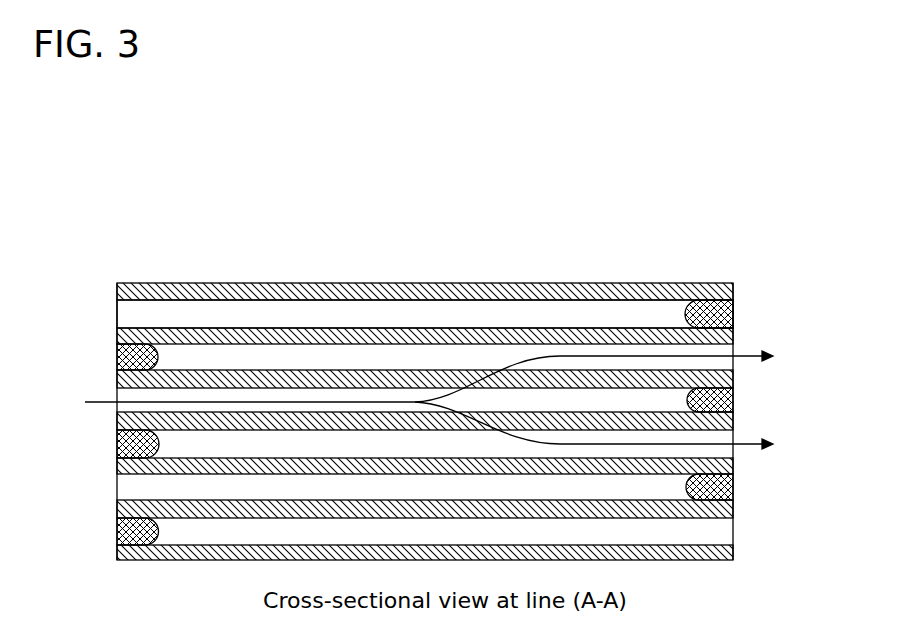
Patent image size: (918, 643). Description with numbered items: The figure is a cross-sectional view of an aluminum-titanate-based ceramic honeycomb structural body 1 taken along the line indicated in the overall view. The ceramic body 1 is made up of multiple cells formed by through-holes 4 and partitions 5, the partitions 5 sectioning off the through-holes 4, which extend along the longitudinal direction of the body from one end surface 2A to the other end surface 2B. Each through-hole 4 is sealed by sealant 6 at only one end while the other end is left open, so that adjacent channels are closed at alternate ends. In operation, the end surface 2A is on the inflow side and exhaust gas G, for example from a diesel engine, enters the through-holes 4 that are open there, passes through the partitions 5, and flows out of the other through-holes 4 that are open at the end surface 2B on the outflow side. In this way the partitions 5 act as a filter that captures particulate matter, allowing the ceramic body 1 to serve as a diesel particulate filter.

The ceramic body 1 is at (420, 367).
The partitions 5 is at (296, 328).
The through-holes 4 is at (127, 318).
The sealant 6 is at (735, 312).
The end surface 2A is at (115, 526).
The end surface 2B is at (735, 487).
The exhaust gas G is at (418, 400).